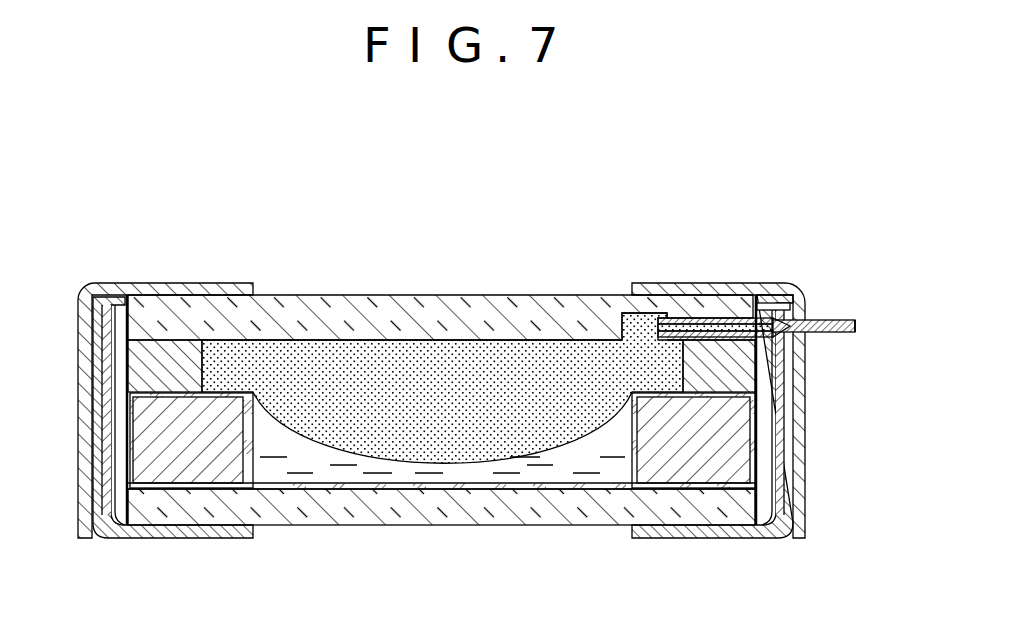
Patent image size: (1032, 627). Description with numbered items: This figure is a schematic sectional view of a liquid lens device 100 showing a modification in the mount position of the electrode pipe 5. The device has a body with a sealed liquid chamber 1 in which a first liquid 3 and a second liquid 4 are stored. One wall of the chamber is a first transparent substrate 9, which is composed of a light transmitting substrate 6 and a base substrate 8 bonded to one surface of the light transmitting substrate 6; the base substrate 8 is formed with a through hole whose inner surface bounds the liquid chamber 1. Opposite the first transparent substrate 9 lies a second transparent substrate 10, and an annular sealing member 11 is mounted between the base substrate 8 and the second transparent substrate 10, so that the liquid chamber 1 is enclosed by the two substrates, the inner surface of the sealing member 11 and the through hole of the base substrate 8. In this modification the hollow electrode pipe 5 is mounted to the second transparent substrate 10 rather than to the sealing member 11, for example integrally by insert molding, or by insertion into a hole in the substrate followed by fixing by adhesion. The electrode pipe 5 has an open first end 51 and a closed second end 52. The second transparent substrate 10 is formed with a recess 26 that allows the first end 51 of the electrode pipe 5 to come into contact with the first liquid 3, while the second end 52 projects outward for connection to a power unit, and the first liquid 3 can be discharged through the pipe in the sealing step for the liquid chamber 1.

The liquid lens device 100 is at (562, 188).
The liquid chamber 1 is at (333, 473).
The first liquid 3 is at (569, 345).
The second liquid 4 is at (553, 478).
The electrode pipe 5 is at (830, 312).
The light transmitting substrate 6 is at (432, 520).
The base substrate 8 is at (150, 452).
The first transparent substrate 9 is at (617, 528).
The second transparent substrate 10 is at (411, 309).
The sealing member 11 is at (740, 370).
The recess 26 is at (627, 310).
The first end 51 is at (648, 312).
The second end 52 is at (855, 330).